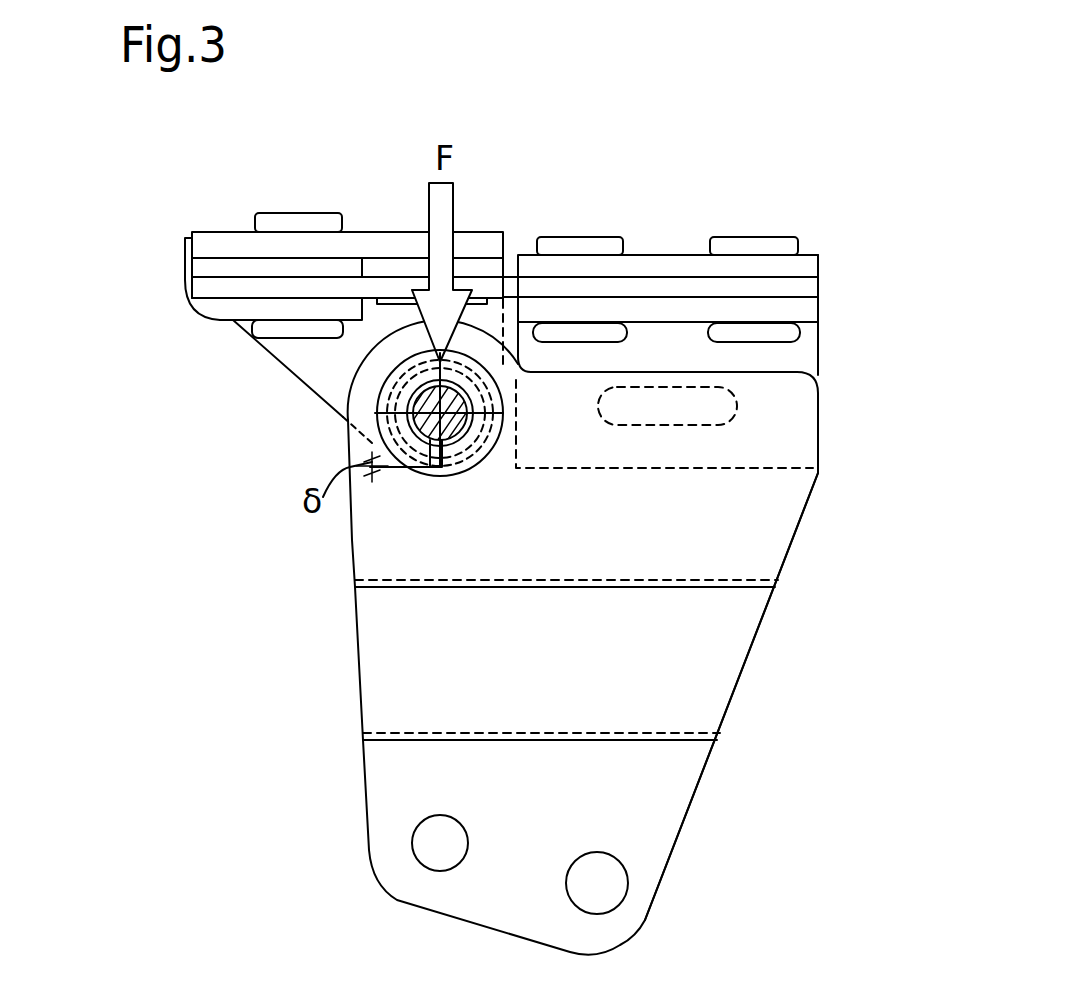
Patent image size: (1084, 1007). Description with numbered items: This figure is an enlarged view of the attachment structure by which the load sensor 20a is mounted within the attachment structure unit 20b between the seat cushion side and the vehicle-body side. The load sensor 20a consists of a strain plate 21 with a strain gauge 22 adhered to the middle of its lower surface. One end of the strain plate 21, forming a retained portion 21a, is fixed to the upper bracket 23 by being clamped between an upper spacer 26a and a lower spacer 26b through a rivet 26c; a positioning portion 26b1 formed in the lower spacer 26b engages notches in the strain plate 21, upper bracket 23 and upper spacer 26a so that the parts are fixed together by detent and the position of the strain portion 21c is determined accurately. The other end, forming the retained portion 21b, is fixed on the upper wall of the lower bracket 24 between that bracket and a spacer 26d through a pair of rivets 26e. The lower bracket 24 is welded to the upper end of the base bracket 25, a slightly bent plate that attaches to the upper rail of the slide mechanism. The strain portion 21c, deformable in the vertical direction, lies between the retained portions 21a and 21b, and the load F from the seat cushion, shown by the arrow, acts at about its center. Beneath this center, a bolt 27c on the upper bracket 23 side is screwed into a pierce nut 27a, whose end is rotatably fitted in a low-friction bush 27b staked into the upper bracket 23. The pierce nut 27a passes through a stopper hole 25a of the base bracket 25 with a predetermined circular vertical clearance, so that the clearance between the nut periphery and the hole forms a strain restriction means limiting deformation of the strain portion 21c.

The load sensor 20a is at (822, 291).
The attachment structure unit 20b is at (812, 543).
The strain plate 21 is at (770, 283).
The retained portion 21a is at (248, 287).
The retained portion 21b is at (650, 292).
The strain portion 21c is at (377, 287).
The strain gauge 22 is at (483, 275).
The upper bracket 23 is at (317, 380).
The lower bracket 24 is at (803, 355).
The base bracket 25 is at (735, 655).
The stopper hole 25a is at (427, 470).
The upper spacer 26a is at (240, 272).
The lower spacer 26b is at (215, 310).
The positioning portion 26b1 is at (187, 253).
The rivet 26c is at (297, 220).
The spacer 26d is at (808, 265).
The pair of rivets 26e is at (752, 238).
The pierce nut 27a is at (476, 385).
The bush 27b is at (458, 455).
The bolt 27c is at (455, 428).